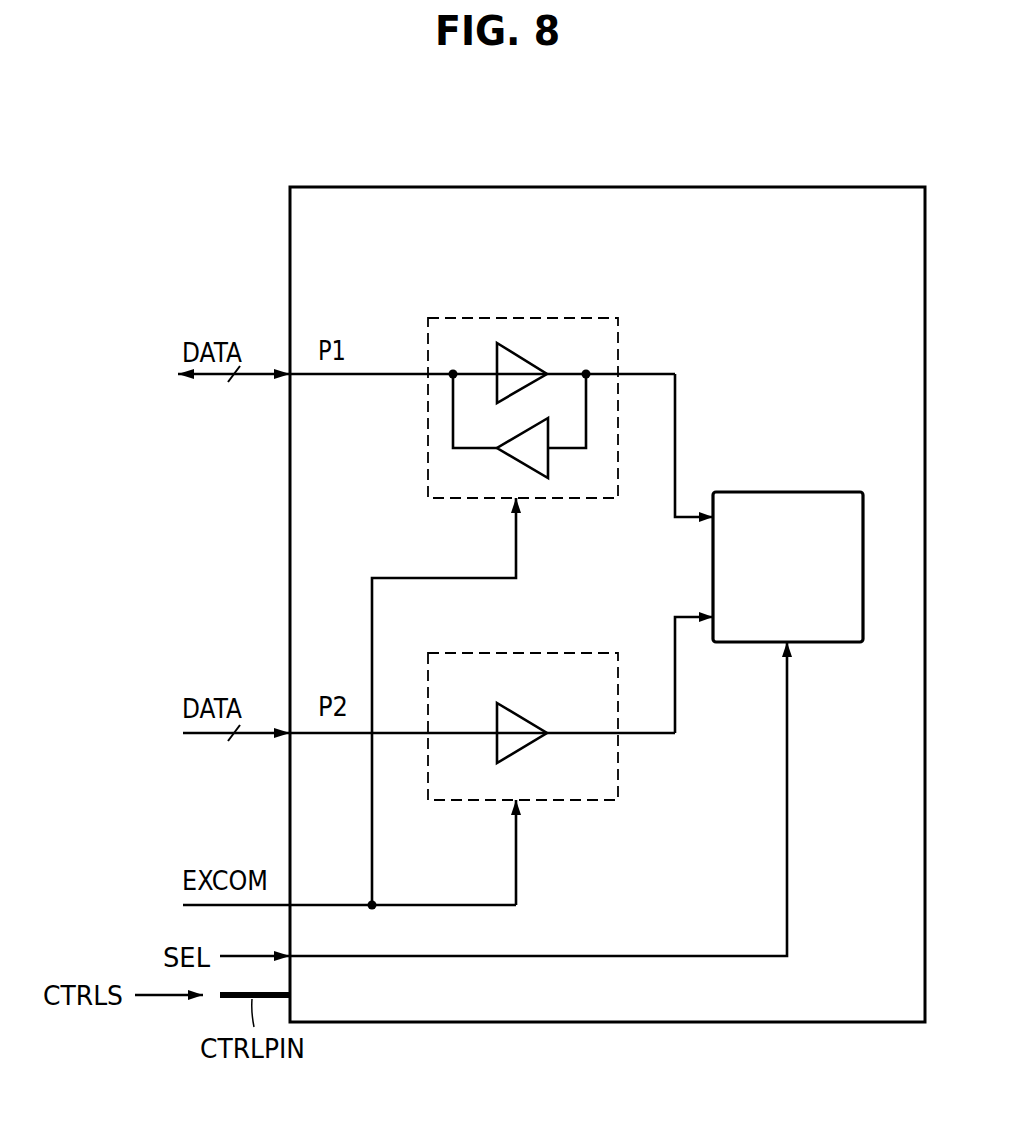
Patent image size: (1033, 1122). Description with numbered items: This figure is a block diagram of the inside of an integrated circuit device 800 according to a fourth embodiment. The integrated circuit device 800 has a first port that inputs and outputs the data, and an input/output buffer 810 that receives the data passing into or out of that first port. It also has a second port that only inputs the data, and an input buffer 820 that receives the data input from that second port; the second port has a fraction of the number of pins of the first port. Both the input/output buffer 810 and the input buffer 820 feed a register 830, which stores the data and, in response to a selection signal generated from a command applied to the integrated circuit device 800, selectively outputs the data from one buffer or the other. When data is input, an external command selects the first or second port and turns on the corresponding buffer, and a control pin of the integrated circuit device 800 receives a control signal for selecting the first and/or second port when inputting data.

The integrated circuit device 800 is at (790, 187).
The input/output buffer 810 is at (518, 318).
The input buffer 820 is at (518, 653).
The register 830 is at (788, 492).